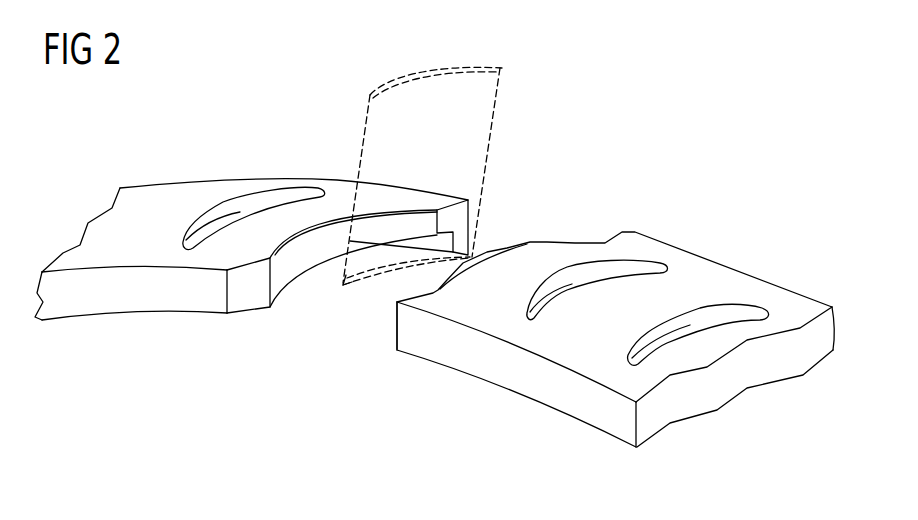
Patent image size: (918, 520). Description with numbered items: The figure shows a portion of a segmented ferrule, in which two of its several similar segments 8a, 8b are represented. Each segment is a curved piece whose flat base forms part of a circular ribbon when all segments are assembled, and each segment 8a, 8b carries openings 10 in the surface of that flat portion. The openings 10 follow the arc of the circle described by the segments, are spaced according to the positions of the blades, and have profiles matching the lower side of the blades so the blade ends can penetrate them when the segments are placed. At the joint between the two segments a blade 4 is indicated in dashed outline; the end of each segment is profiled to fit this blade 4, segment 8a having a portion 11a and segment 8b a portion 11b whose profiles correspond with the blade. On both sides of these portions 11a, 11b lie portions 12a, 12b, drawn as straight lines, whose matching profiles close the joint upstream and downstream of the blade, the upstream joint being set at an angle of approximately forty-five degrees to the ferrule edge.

The blade 4 is at (377, 127).
The segment 8a is at (187, 186).
The segment 8b is at (703, 273).
The openings 10 is at (259, 202).
The portion 11a is at (310, 240).
The portion 11b is at (533, 242).
The portions 12a is at (460, 213).
The portions 12b is at (608, 242).